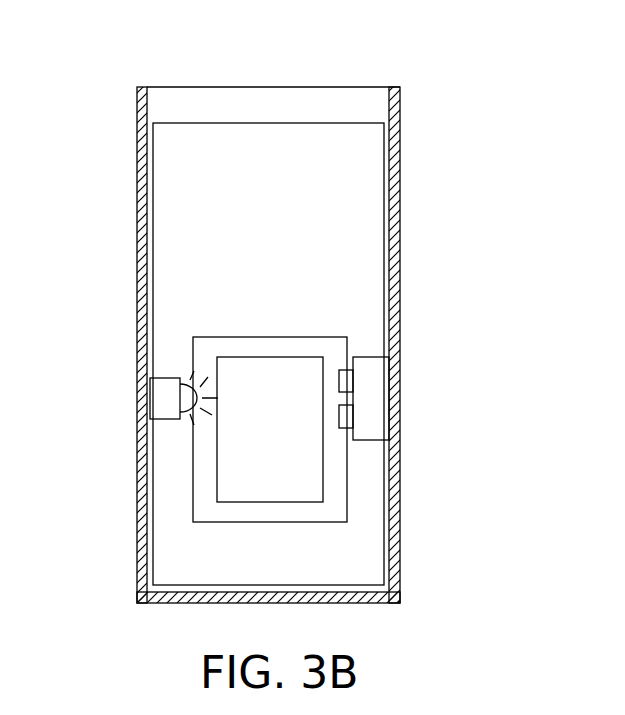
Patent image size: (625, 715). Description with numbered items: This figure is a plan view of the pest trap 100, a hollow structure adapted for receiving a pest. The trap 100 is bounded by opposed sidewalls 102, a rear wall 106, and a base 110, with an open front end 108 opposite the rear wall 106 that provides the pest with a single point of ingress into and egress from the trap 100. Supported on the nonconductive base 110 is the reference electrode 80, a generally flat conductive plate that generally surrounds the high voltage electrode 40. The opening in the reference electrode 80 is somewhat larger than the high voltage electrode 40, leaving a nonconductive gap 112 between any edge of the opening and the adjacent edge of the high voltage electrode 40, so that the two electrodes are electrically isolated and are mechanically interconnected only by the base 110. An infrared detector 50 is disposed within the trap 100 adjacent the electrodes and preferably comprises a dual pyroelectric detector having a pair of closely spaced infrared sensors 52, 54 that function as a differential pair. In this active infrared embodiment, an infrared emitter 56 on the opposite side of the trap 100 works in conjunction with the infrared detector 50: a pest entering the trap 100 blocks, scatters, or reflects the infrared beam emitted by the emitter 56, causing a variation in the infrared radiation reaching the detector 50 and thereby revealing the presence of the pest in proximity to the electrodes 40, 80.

The trap 100 is at (448, 250).
The sidewalls 102 is at (140, 218).
The rear wall 106 is at (378, 603).
The open front end 108 is at (392, 87).
The base 110 is at (207, 87).
The reference electrode 80 is at (273, 142).
The nonconductive gap 112 is at (240, 510).
The high voltage electrode 40 is at (297, 482).
The infrared sensor 52 is at (339, 383).
The infrared sensor 54 is at (339, 418).
The infrared detector 50 is at (371, 397).
The infrared emitter 56 is at (166, 403).